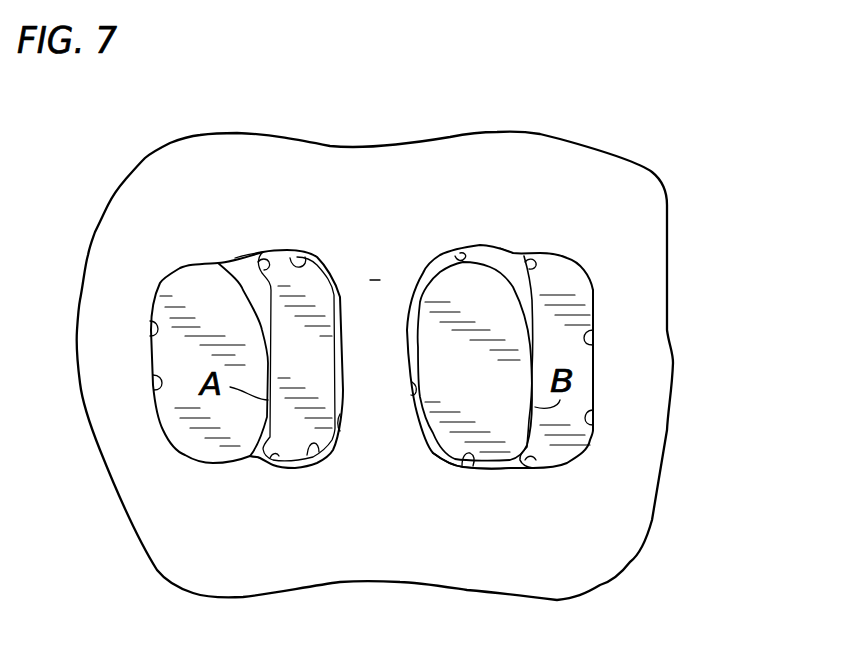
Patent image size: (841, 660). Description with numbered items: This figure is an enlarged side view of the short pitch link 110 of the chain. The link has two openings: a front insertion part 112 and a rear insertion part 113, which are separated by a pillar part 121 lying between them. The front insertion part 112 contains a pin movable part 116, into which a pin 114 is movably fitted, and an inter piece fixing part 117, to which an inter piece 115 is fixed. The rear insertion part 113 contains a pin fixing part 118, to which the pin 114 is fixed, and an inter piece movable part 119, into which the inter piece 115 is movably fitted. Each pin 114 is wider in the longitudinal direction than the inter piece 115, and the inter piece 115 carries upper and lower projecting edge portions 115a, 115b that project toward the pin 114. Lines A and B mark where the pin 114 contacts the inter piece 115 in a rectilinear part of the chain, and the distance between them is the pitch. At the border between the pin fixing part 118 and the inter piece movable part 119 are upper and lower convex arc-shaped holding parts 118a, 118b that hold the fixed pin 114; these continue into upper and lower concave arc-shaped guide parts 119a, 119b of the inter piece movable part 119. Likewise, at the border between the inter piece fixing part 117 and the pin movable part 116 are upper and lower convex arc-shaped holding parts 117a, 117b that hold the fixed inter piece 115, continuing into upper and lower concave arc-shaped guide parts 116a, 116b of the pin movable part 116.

The short pitch link 110 is at (668, 220).
The front insertion part 112 is at (590, 343).
The rear insertion part 113 is at (155, 390).
The pin 114 is at (183, 430).
The inter piece 115 is at (310, 355).
The projecting edge portion 115a is at (262, 262).
The projecting edge portion 115b is at (273, 452).
The pin movable part 116 is at (415, 390).
The concave arc-shaped guide part 116a is at (460, 257).
The concave arc-shaped guide part 116b is at (468, 458).
The inter piece fixing part 117 is at (587, 407).
The convex arc-shaped holding part 117a is at (520, 253).
The convex arc-shaped holding part 117b is at (512, 470).
The pin fixing part 118 is at (147, 328).
The convex arc-shaped holding part 118a is at (222, 253).
The convex arc-shaped holding part 118b is at (245, 468).
The inter piece movable part 119 is at (339, 422).
The concave arc-shaped guide part 119a is at (300, 258).
The concave arc-shaped guide part 119b is at (312, 445).
The pillar part 121 is at (375, 282).